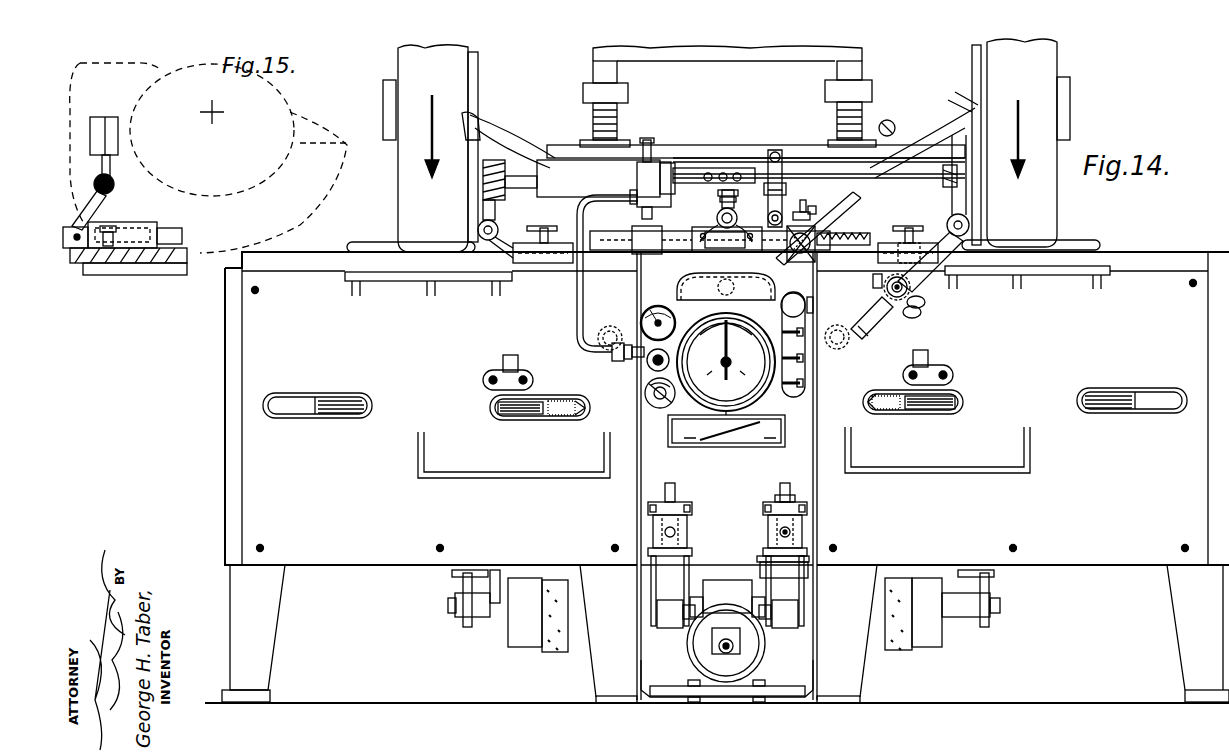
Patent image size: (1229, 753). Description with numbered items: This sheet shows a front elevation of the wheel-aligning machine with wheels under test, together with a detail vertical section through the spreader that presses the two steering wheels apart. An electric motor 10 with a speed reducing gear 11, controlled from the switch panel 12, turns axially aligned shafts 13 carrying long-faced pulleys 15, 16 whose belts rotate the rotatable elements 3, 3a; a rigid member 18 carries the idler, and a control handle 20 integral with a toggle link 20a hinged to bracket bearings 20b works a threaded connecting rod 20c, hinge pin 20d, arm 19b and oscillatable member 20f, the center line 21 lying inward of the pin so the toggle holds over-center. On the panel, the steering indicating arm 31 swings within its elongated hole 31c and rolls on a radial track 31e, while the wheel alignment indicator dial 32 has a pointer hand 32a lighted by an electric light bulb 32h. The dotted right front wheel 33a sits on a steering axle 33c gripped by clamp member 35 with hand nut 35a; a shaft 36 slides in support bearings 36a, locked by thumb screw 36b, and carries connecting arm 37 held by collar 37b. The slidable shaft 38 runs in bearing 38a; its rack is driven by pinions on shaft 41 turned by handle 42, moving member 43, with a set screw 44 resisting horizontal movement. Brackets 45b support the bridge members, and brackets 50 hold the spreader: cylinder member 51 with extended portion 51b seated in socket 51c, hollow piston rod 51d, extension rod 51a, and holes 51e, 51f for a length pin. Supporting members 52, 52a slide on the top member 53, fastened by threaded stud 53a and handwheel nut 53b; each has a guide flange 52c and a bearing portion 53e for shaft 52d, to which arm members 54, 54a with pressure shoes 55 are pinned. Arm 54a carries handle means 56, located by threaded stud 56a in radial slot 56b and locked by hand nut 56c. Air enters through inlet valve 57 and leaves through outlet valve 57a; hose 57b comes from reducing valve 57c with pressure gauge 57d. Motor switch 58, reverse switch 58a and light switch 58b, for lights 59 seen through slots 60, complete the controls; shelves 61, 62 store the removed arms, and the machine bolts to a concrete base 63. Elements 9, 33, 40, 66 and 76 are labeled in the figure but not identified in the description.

In FIG. 14, the rotatable element 3 is at (953, 393).
In FIG. 14, the rotatable element 3a is at (350, 400).
In FIG. 14, the leg 9 is at (255, 683).
In FIG. 14, the electric motor 10 is at (745, 658).
In FIG. 14, the speed reducing gear 11 is at (723, 600).
In FIG. 14, the switch panel 12 is at (797, 343).
In FIG. 14, the shaft 13 is at (688, 620).
In FIG. 14, the pulley 15 is at (927, 633).
In FIG. 14, the pulley 16 is at (515, 642).
In FIG. 14, the rigid member 18 is at (528, 573).
In FIG. 14, the arm 19b is at (668, 628).
In FIG. 14, the control handle 20 is at (648, 528).
In FIG. 14, the toggle link 20a is at (823, 562).
In FIG. 14, the bracket bearings 20b is at (758, 555).
In FIG. 14, the threaded connecting rod 20c is at (810, 580).
In FIG. 14, the hinge pin 20d is at (757, 558).
In FIG. 14, the oscillatable member 20f is at (783, 505).
In FIG. 14, the center line 21 is at (793, 528).
In FIG. 14, the steering indicating arm 31 is at (672, 428).
In FIG. 14, the elongated hole 31c is at (772, 408).
In FIG. 14, the radial track 31e is at (680, 448).
In FIG. 14, the wheel alignment indicator dial 32 is at (692, 318).
In FIG. 15, the pointer hand 32a is at (307, 143).
In FIG. 14, the electric light bulb 32h is at (695, 298).
In FIG. 14, the cylinder 33 is at (1042, 58).
In FIG. 14, the right front wheel 33a is at (398, 58).
In FIG. 14, the steering or front axle 33c is at (700, 153).
In FIG. 14, the clamp member 35 is at (783, 193).
In FIG. 14, the hand nut 35a is at (768, 197).
In FIG. 14, the shaft 36 is at (717, 212).
In FIG. 14, the support bearings 36a is at (712, 230).
In FIG. 14, the thumb screw 36b is at (720, 195).
In FIG. 14, the connecting arm 37 is at (730, 248).
In FIG. 14, the collar 37b is at (720, 270).
In FIG. 14, the slidable shaft 38 is at (806, 210).
In FIG. 14, the bearing 38a is at (633, 232).
In FIG. 14, the block 40 is at (815, 261).
In FIG. 14, the pinion gear shaft 41 is at (827, 237).
In FIG. 14, the handle 42 is at (847, 198).
In FIG. 14, the member 43 is at (678, 248).
In FIG. 14, the set screw 44 is at (813, 209).
In FIG. 14, the brackets 45b is at (348, 272).
In FIG. 14, the bracket 50 is at (502, 357).
In FIG. 14, the cylinder member 51 is at (553, 170).
In FIG. 14, the extension rod 51a is at (895, 173).
In FIG. 14, the extended portion 51b is at (510, 172).
In FIG. 14, the socket 51c is at (490, 160).
In FIG. 14, the piston rod 51d is at (682, 175).
In FIG. 14, the spaced hole 51e is at (715, 175).
In FIG. 14, the spaced hole 51f is at (782, 162).
In FIG. 14, the supporting member 52 is at (520, 243).
In FIG. 15, the supporting member 52a is at (63, 258).
In FIG. 14, the supporting member 52a is at (905, 226).
In FIG. 15, the guide flange 52c is at (70, 258).
In FIG. 15, the shaft 52d is at (168, 233).
In FIG. 14, the shaft 52d is at (478, 226).
In FIG. 15, the top member 53 is at (173, 253).
In FIG. 14, the top member 53 is at (510, 262).
In FIG. 15, the threaded stud 53a is at (108, 225).
In FIG. 14, the threaded stud 53a is at (927, 230).
In FIG. 14, the handwheel nut 53b is at (543, 229).
In FIG. 15, the bearing portion 53e is at (145, 228).
In FIG. 15, the arm member 54 is at (105, 128).
In FIG. 14, the arm member 54 is at (487, 118).
In FIG. 14, the arm member 54a is at (960, 117).
In FIG. 15, the pressure shoe 55 is at (115, 145).
In FIG. 14, the pressure shoe 55 is at (460, 125).
In FIG. 14, the handle means 56 is at (882, 315).
In FIG. 14, the threaded stud 56a is at (926, 305).
In FIG. 14, the radial slot 56b is at (921, 310).
In FIG. 14, the hand nut 56c is at (873, 283).
In FIG. 14, the inlet valve 57 is at (665, 198).
In FIG. 14, the outlet valve 57a is at (647, 140).
In FIG. 14, the compressed air hose 57b is at (577, 308).
In FIG. 14, the reducing valve 57c is at (645, 392).
In FIG. 14, the pressure gauge 57d is at (653, 350).
In FIG. 14, the motor switch 58 is at (805, 383).
In FIG. 14, the reverse switch 58a is at (805, 358).
In FIG. 14, the switch 58b is at (807, 300).
In FIG. 14, the lights 59 is at (598, 340).
In FIG. 14, the slots 60 is at (587, 404).
In FIG. 14, the shelf 61 is at (448, 472).
In FIG. 14, the shelf 62 is at (993, 470).
In FIG. 14, the concrete island or base 63 is at (1066, 701).
In FIG. 14, the indicator 66 is at (292, 400).
In FIG. 14, the bar 76 is at (358, 242).